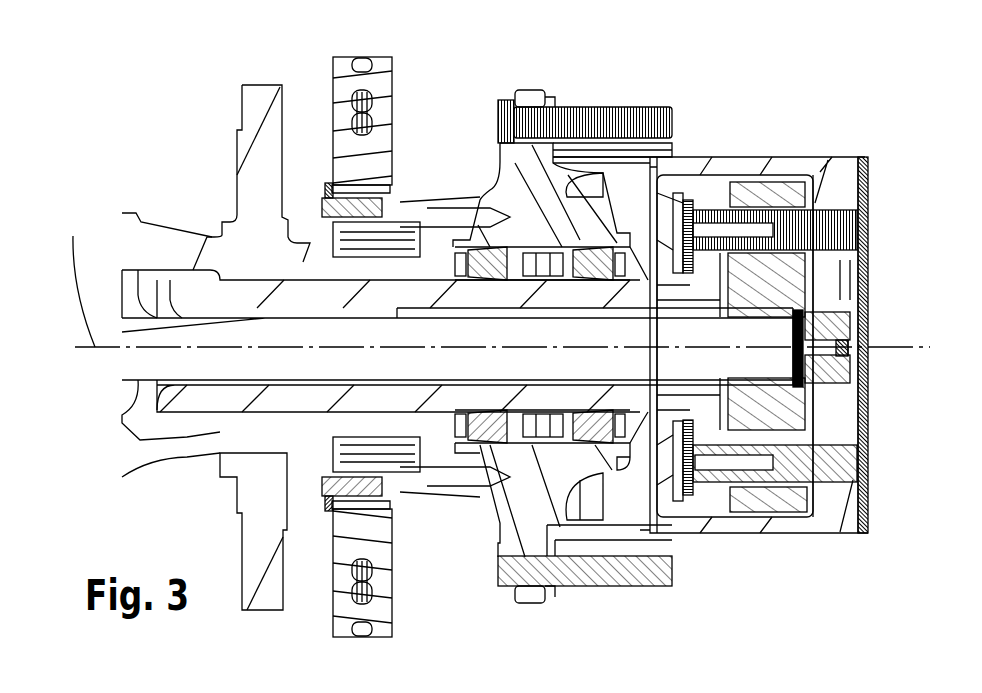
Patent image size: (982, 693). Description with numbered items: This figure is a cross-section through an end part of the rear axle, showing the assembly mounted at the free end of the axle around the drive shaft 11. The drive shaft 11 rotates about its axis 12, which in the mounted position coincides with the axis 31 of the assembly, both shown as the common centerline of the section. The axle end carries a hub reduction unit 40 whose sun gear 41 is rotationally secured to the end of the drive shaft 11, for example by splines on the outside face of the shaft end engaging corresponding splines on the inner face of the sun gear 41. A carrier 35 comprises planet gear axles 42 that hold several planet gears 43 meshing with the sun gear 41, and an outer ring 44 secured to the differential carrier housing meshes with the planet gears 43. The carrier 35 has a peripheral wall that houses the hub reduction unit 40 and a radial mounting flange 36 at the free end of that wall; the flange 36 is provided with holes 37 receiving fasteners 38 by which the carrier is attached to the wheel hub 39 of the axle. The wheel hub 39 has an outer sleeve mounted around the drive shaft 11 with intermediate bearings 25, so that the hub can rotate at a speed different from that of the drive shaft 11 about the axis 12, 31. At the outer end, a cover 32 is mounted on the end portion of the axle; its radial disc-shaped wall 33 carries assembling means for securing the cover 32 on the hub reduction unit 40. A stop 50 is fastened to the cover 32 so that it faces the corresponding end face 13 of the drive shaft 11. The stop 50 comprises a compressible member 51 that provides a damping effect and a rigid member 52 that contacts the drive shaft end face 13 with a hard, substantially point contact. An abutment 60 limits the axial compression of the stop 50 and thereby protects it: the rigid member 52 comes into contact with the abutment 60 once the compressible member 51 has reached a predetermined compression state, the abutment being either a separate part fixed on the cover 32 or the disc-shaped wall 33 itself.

The drive shaft 11 is at (662, 343).
The axis of the drive shafts 12 is at (73, 236).
The axis of the assembly 31 is at (124, 479).
The end face of the drive shaft 13 is at (790, 320).
The intermediate bearings 25 is at (482, 445).
The cover 32 is at (873, 506).
The radial disc-shaped wall 33 is at (868, 173).
The carrier 35 is at (825, 502).
The radial mounting flange 36 is at (548, 95).
The holes 37 is at (550, 604).
The fasteners 38 is at (618, 108).
The wheel hub 39 is at (490, 190).
The hub reduction unit 40 is at (723, 152).
The sun gear 41 is at (793, 290).
The planet gear axles 42 is at (838, 238).
The planet gears 43 is at (772, 193).
The outer ring 44 is at (698, 515).
The stop 50 is at (881, 338).
The compressible member 51 is at (852, 318).
The rigid member 52 is at (853, 338).
The abutment 60 is at (850, 362).